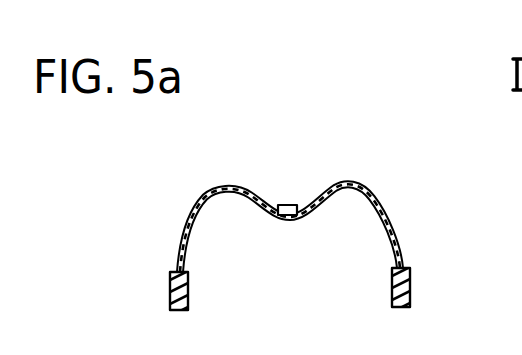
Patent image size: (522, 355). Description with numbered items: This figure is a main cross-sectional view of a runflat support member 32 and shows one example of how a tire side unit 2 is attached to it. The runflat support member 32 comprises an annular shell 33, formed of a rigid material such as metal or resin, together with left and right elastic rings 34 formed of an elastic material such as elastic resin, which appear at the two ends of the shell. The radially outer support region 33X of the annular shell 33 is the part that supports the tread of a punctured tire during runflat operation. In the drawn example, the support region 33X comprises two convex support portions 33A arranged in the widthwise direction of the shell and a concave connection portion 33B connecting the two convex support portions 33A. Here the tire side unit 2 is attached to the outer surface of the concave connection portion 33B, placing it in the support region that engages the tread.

The tire side unit 2 is at (290, 207).
The runflat support member 32 is at (386, 196).
The annular shell 33 is at (401, 237).
The convex support portions 33A is at (232, 187).
The concave connection portion 33B is at (290, 219).
The support region 33X is at (200, 190).
The elastic rings 34 is at (410, 293).